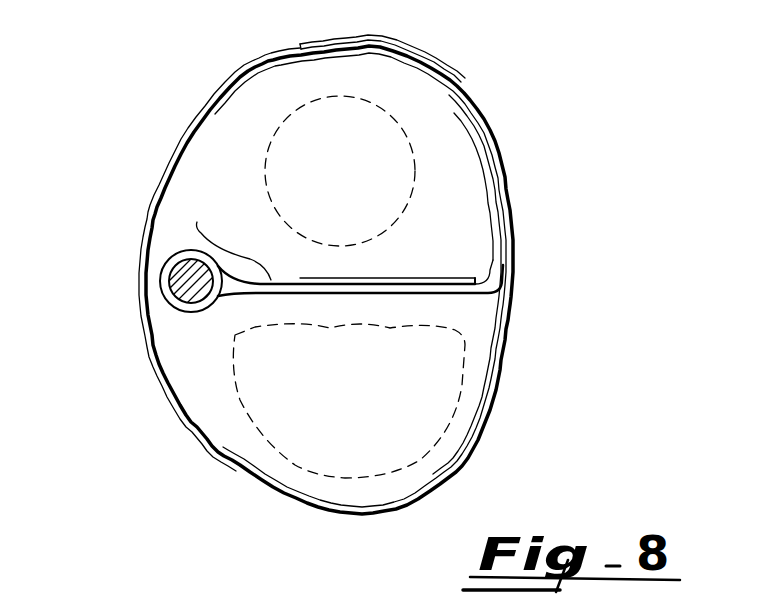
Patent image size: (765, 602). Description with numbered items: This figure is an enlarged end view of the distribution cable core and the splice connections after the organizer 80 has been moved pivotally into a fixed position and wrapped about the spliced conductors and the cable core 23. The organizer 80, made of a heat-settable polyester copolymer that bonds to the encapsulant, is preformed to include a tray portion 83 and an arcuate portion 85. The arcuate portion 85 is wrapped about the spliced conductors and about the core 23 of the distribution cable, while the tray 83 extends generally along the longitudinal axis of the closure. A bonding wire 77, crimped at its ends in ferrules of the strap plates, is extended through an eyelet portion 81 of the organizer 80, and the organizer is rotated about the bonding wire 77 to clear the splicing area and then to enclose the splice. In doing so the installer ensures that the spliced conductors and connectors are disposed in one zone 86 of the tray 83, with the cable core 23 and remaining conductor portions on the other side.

The organizer 80 is at (517, 230).
The arcuate portion 85 is at (507, 185).
The zone 86 is at (388, 157).
The core 23 is at (302, 460).
The bonding wire 77 is at (178, 288).
The eyelet portion 81 is at (176, 250).
The tray portion 83 is at (197, 222).